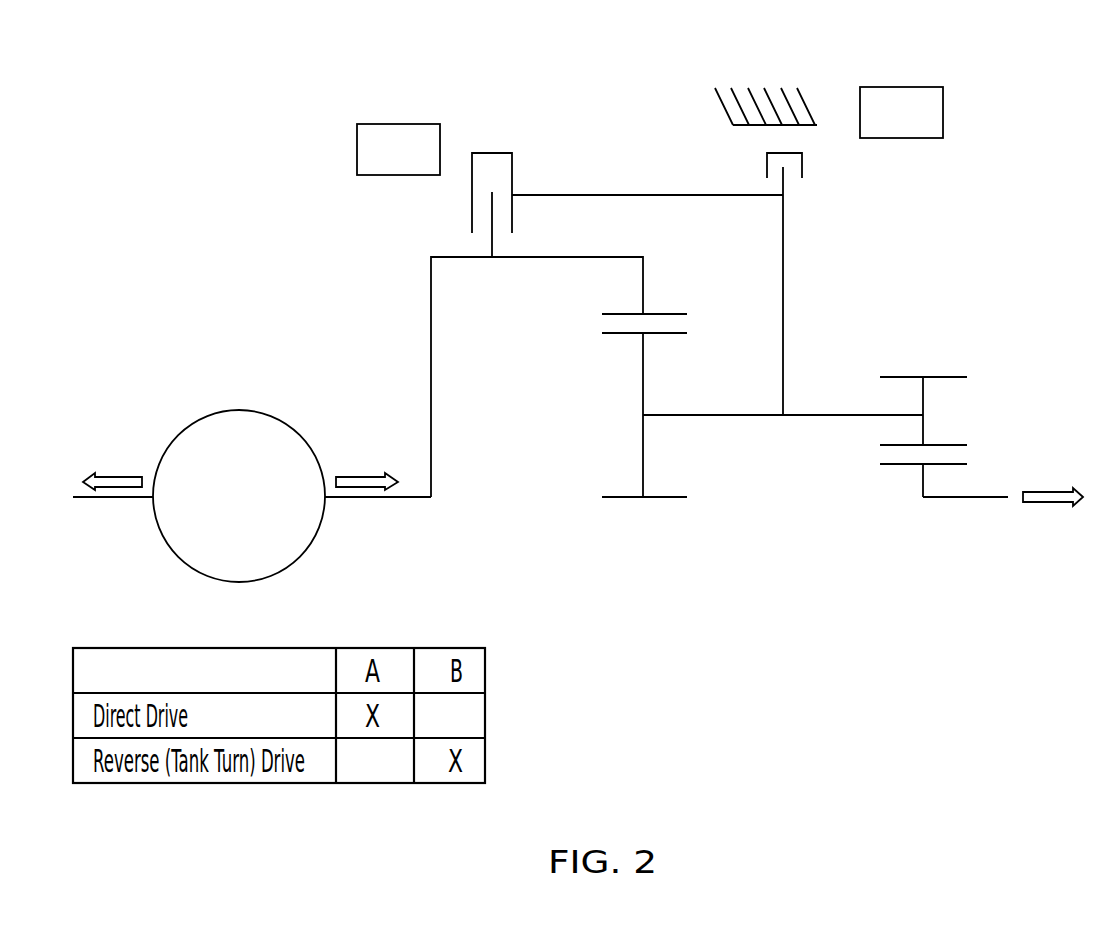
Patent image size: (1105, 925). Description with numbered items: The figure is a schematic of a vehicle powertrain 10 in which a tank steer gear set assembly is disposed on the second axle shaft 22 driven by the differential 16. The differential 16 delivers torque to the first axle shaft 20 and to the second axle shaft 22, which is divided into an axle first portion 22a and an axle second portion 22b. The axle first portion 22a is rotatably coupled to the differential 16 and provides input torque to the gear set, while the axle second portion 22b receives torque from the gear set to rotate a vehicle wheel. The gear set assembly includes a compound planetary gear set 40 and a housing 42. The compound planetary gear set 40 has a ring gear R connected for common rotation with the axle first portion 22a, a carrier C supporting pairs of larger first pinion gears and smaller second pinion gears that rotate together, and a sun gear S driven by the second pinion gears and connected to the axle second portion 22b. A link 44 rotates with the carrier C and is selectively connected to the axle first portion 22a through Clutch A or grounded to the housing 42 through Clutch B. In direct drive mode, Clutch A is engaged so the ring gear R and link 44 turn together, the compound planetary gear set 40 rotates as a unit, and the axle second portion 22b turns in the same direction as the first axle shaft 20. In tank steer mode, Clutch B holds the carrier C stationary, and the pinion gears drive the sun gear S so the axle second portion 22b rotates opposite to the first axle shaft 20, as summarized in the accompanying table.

The vehicle powertrain 10 is at (212, 86).
The differential 16 is at (238, 410).
The first axle shaft 20 is at (112, 500).
The second axle shaft 22 is at (418, 541).
The axle first portion 22a is at (366, 500).
The axle second portion 22b is at (965, 500).
The compound planetary gear set 40 is at (760, 514).
The housing 42 is at (735, 126).
The link 44 is at (630, 193).